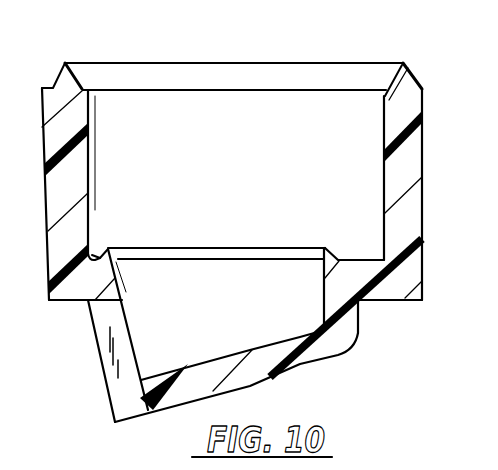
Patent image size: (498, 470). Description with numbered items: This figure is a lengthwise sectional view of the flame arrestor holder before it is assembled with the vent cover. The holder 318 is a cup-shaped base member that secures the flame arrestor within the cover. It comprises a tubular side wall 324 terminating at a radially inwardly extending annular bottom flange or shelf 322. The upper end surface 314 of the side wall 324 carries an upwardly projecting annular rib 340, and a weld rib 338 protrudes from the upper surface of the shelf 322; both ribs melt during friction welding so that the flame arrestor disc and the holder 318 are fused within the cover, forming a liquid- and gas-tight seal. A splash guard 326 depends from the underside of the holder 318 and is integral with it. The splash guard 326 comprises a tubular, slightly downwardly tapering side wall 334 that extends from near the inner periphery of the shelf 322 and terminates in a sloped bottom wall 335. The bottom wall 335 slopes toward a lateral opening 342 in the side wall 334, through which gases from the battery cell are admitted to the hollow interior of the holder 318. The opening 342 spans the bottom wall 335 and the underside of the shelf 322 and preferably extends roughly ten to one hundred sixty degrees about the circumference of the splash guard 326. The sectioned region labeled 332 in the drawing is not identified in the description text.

The annular rib 340 is at (64, 62).
The upper end surface 314 is at (418, 83).
The tubular side wall 324 is at (424, 173).
The bottom flange (shelf) 322 is at (93, 252).
The weld rib 338 is at (97, 256).
The side wall 334 is at (118, 316).
The door 332 is at (257, 334).
The sloped bottom wall 335 is at (267, 376).
The cup-shaped base member (holder) 318 is at (395, 318).
The lateral opening 342 is at (73, 307).
The splash guard 326 is at (178, 416).